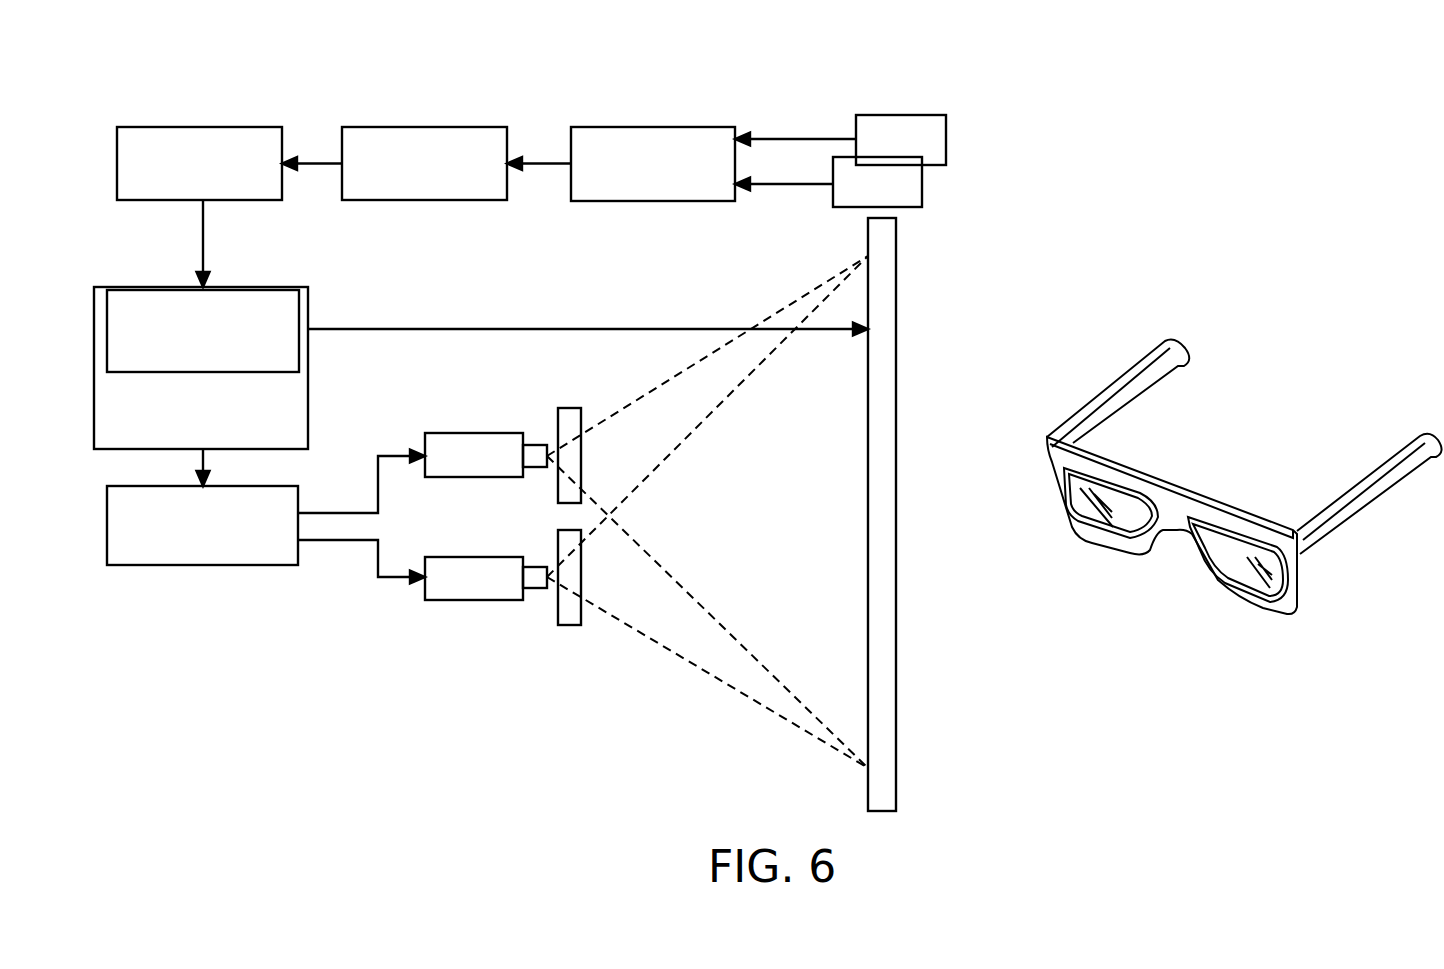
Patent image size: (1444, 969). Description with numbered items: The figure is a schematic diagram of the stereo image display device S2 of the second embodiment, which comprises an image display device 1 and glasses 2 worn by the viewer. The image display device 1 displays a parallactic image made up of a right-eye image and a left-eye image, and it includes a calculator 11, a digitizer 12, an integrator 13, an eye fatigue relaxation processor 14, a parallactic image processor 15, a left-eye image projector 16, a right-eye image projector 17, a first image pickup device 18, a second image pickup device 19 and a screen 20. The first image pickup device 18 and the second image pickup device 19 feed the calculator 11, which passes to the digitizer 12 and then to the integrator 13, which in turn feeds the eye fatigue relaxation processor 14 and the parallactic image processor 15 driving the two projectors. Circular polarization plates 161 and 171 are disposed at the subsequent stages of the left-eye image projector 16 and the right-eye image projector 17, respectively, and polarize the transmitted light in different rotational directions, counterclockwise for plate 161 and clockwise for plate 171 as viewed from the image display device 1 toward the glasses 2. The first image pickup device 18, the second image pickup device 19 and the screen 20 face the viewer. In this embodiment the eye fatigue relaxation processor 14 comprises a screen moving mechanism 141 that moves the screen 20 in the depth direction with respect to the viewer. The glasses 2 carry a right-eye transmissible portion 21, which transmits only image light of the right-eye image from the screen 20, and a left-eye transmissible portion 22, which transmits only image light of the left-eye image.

The image display device 1 is at (982, 100).
The stereo image display device S2 is at (1117, 124).
The glasses 2 is at (1244, 491).
The calculator 11 is at (627, 127).
The digitizer 12 is at (442, 127).
The integrator 13 is at (227, 127).
The eye fatigue relaxation processor 14 is at (271, 287).
The screen moving mechanism 141 is at (299, 308).
The parallactic image processor 15 is at (272, 565).
The left-eye image projector 16 is at (473, 433).
The circular polarization plate 161 is at (571, 408).
The right-eye image projector 17 is at (473, 600).
The circular polarization plate 171 is at (570, 625).
The first image pickup device 18 is at (892, 115).
The second image pickup device 19 is at (922, 190).
The screen 20 is at (896, 369).
The right-eye transmissible portion 21 is at (1123, 517).
The left-eye transmissible portion 22 is at (1233, 557).